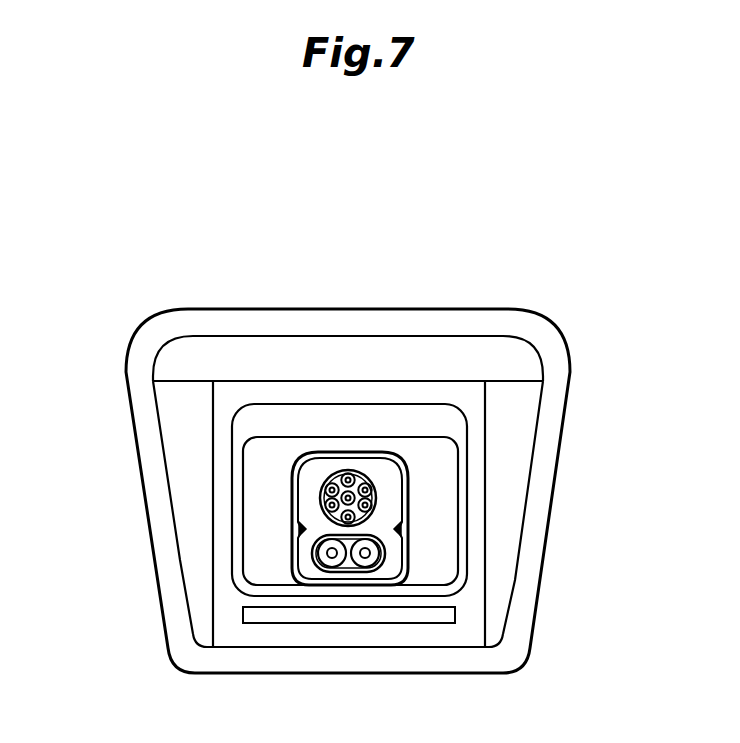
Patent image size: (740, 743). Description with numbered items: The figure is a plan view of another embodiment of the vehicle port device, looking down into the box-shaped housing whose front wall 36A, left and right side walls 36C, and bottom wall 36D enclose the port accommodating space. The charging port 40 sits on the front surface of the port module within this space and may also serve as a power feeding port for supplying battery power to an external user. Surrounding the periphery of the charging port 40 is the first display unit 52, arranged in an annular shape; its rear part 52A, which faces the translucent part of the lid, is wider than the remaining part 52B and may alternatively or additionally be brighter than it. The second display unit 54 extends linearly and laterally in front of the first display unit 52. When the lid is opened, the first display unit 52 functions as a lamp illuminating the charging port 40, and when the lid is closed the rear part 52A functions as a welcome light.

The front wall 36A is at (368, 646).
The side wall 36C is at (180, 442).
The bottom wall 36D is at (477, 398).
The charging port 40 is at (307, 502).
The first display unit 52 is at (468, 489).
The rear part of the first display unit 52A is at (370, 412).
The remaining part of the first display unit 52B is at (463, 526).
The second display unit 54 is at (310, 616).